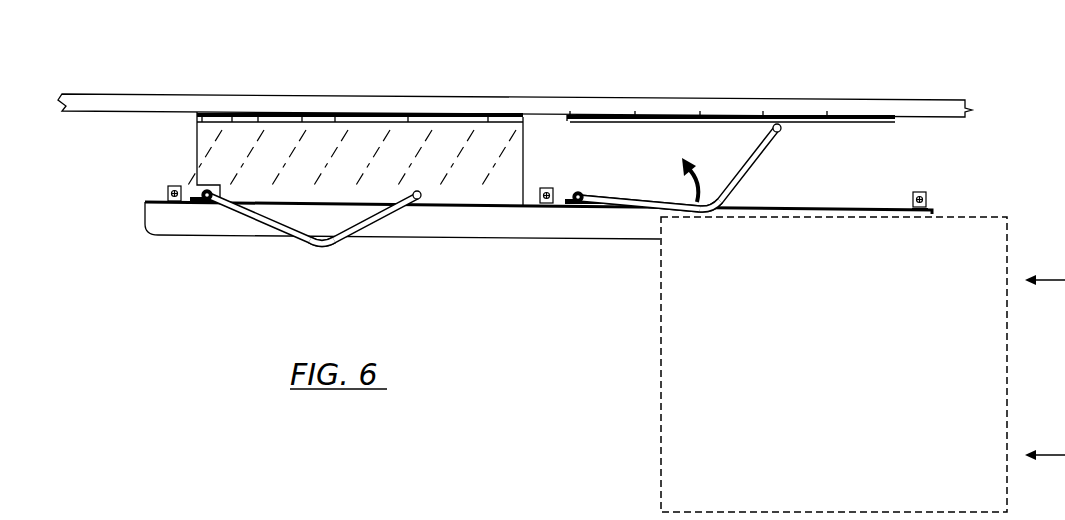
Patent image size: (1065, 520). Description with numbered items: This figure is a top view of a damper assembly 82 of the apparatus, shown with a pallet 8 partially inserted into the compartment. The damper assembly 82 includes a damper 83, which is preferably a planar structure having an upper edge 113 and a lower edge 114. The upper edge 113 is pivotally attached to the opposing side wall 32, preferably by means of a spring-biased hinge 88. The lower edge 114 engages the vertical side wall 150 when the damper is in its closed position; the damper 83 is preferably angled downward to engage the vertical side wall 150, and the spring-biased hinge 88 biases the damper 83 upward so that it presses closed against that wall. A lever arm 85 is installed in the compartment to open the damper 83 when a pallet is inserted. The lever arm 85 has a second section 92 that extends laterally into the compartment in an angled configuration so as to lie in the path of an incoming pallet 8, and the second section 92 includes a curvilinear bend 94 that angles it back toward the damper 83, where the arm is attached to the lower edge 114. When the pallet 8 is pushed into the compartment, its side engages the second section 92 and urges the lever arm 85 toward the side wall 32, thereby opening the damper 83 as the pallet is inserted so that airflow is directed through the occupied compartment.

The pallet 8 is at (652, 367).
The opposing side wall 32 is at (915, 112).
The damper assembly 82 is at (526, 163).
The damper 83 is at (413, 132).
The lever arm 85 is at (491, 187).
The spring-biased hinge 88 is at (258, 123).
The second section 92 is at (608, 198).
The curvilinear bend 94 is at (320, 240).
The upper edge 113 is at (233, 112).
The lower edge 114 is at (519, 208).
The vertical side wall 150 is at (430, 232).